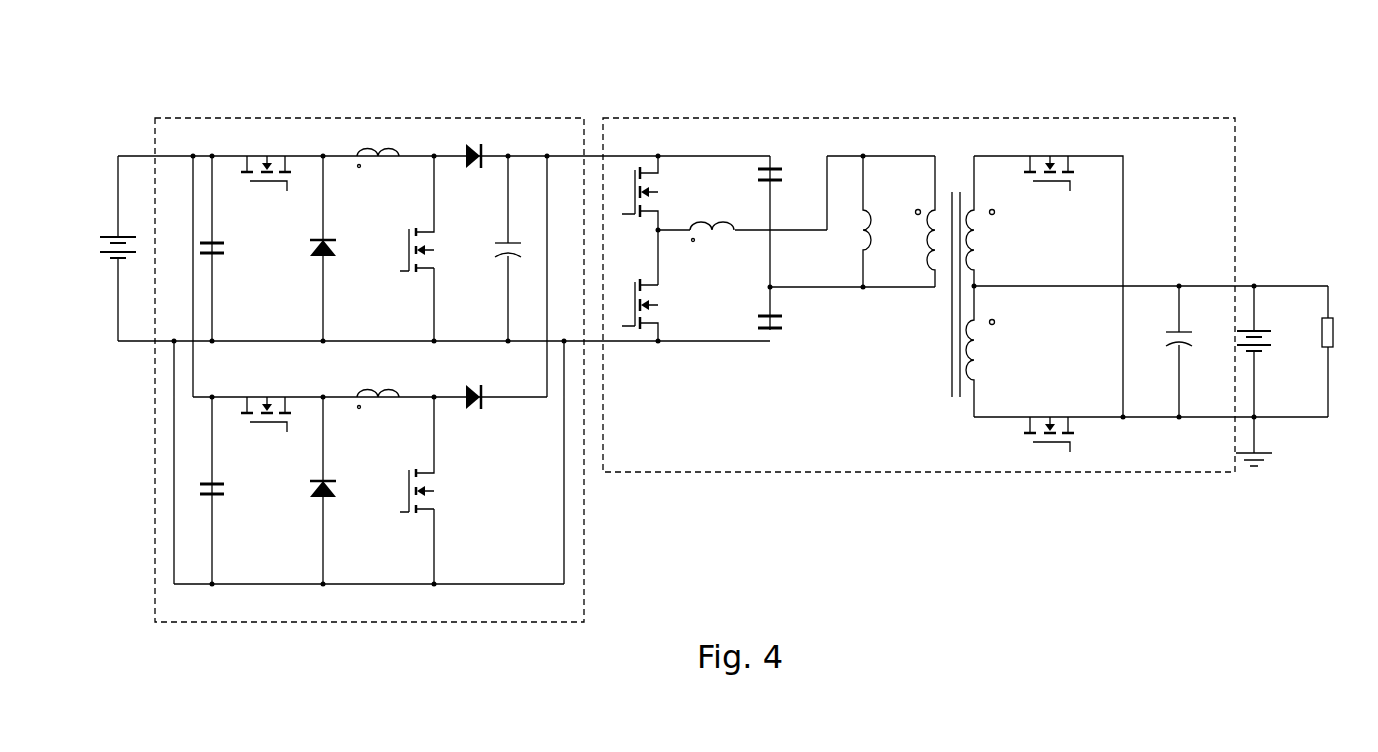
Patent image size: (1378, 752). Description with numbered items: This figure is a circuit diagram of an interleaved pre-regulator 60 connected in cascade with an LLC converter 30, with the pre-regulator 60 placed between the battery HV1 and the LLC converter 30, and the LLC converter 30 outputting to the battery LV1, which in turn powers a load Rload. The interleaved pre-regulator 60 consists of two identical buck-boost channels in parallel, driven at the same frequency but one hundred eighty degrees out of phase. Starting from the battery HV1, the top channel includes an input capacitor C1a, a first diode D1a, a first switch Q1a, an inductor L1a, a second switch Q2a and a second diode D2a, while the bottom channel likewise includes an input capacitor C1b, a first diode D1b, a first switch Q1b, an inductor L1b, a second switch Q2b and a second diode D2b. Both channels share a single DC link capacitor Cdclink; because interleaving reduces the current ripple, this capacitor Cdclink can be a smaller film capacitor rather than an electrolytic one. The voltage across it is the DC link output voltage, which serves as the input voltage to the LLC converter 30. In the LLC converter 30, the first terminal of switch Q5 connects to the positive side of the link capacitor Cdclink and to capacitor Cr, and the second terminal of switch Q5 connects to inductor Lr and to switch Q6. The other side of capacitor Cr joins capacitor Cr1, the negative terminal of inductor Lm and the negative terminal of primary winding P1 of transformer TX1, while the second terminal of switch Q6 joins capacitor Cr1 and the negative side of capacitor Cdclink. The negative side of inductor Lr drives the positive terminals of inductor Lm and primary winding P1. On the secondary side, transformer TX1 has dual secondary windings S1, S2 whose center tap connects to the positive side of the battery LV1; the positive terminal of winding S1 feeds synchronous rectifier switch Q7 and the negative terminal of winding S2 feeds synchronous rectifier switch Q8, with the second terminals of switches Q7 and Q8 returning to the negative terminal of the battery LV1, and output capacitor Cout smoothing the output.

The interleaved pre-regulator 60 is at (343, 108).
The LLC converter 30 is at (791, 108).
The battery HV1 is at (146, 248).
The first switch Q1a is at (250, 173).
The input capacitor C1a is at (225, 248).
The first diode D1a is at (302, 248).
The inductor L1a is at (378, 169).
The second diode D2a is at (471, 148).
The second switch Q2a is at (415, 248).
The DC link capacitor Cdclink is at (536, 248).
The first switch Q1b is at (250, 414).
The input capacitor C1b is at (226, 490).
The first diode D1b is at (304, 490).
The inductor L1b is at (378, 411).
The second diode D2b is at (473, 386).
The second switch Q2b is at (415, 490).
The switch Q5 is at (640, 220).
The switch Q6 is at (640, 315).
The inductor Lr is at (712, 242).
The capacitor Cr is at (778, 221).
The capacitor Cr1 is at (782, 308).
The inductor Lm is at (879, 221).
The primary winding P1 is at (916, 221).
The transformer TX1 is at (987, 294).
The secondary winding S1 is at (983, 221).
The secondary winding S2 is at (983, 351).
The switch Q7 is at (1037, 173).
The switch Q8 is at (1037, 434).
The output capacitor Cout is at (1195, 351).
The battery LV1 is at (1266, 376).
The load Rload is at (1346, 351).